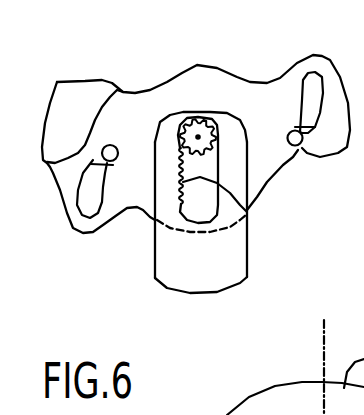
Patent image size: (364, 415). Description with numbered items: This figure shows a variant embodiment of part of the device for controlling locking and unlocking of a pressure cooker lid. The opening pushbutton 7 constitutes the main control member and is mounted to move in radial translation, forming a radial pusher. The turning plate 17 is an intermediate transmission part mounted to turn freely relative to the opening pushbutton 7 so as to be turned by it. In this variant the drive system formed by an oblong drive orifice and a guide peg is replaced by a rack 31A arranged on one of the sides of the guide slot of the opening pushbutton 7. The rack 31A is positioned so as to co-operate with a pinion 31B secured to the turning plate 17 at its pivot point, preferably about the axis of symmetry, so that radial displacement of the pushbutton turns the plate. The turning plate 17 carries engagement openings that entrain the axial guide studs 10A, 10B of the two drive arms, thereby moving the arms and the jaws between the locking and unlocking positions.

The turning plate 17 is at (196, 123).
The axial guide stud 10A is at (96, 116).
The axial guide stud 10B is at (319, 137).
The opening pushbutton 7 is at (225, 202).
The pinion 31B is at (181, 109).
The rack 31A is at (253, 208).